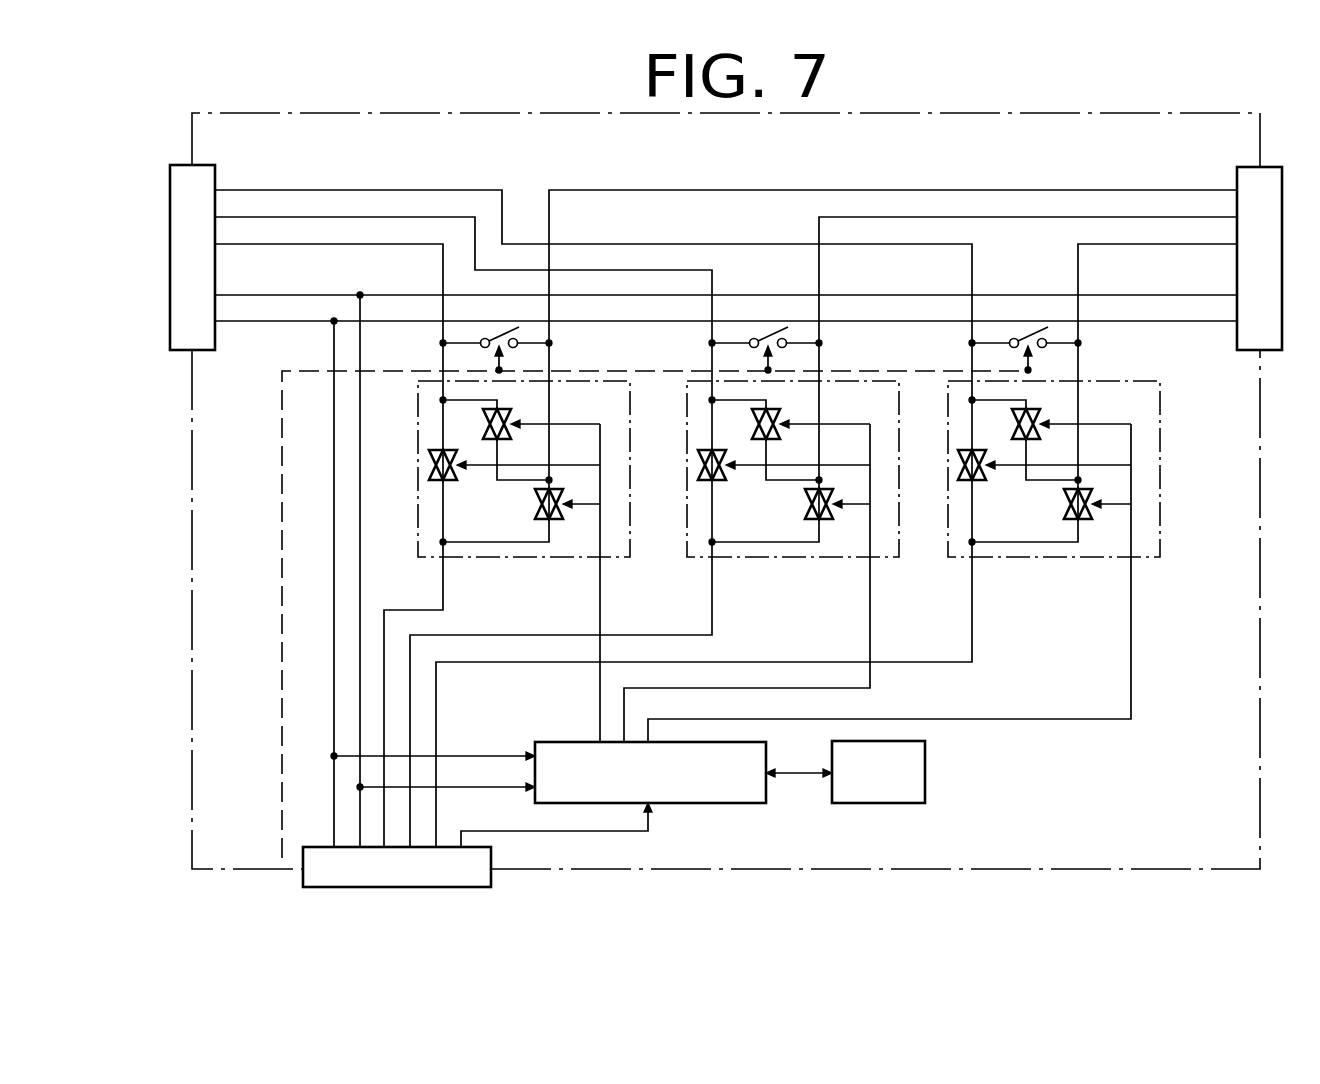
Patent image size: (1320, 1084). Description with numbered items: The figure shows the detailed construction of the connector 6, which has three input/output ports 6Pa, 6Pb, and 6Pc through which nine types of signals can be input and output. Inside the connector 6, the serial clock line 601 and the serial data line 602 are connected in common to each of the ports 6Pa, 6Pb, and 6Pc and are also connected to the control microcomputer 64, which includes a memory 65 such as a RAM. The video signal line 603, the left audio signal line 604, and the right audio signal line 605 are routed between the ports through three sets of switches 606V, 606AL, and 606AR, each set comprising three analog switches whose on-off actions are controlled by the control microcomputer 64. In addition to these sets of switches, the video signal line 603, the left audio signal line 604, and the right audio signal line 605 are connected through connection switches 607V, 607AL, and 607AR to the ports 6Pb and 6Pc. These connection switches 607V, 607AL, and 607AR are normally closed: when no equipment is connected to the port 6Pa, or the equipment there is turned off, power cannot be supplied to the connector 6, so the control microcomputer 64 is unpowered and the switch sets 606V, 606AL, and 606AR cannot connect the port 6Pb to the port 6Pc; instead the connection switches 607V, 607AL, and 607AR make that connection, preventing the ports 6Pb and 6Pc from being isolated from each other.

The connector 6 is at (824, 870).
The input/output port 6Pa is at (491, 887).
The input/output port 6Pb is at (198, 167).
The input/output port 6Pc is at (1236, 178).
The serial clock line 601 is at (251, 328).
The serial data line 602 is at (290, 295).
The video signal line 603 is at (363, 244).
The left audio signal line 604 is at (363, 217).
The right audio signal line 605 is at (445, 190).
The set of switches for the video signal line 606V is at (512, 557).
The set of switches for the left audio signal line 606AL is at (790, 557).
The set of switches for the right audio signal line 606AR is at (1058, 557).
The connection switch 607V is at (555, 345).
The connection switch 607AL is at (825, 345).
The connection switch 607AR is at (1084, 345).
The control microcomputer 64 is at (707, 805).
The memory 65 is at (927, 777).